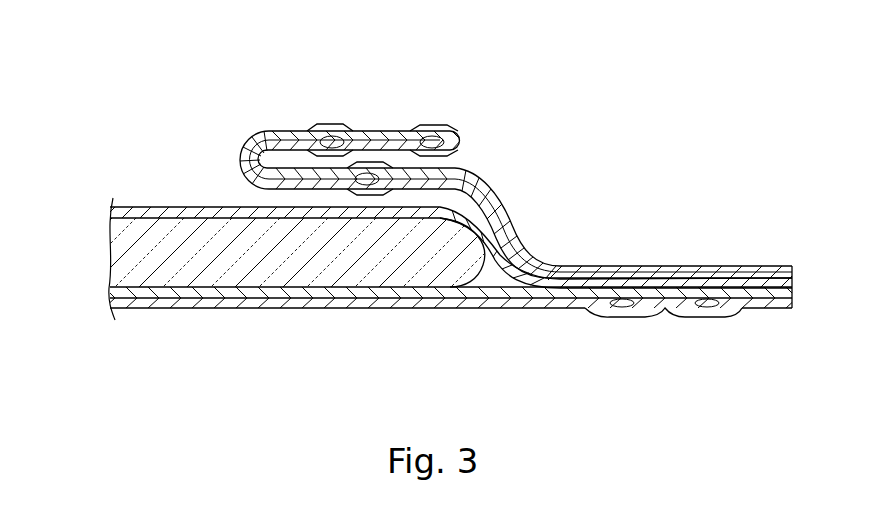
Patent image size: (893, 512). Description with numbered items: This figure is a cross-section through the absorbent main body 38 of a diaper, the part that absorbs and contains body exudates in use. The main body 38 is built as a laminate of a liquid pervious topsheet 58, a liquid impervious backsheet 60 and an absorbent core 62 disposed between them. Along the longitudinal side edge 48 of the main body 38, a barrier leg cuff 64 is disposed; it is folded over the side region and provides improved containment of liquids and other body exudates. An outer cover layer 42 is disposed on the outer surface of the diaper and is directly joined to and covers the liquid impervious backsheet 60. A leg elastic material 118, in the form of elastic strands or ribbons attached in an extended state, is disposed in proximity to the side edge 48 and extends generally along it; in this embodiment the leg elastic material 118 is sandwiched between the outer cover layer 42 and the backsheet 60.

The absorbent main body 38 is at (641, 153).
The outer cover layer 42 is at (500, 310).
The longitudinal side edge 48 is at (793, 275).
The liquid pervious topsheet 58 is at (150, 205).
The liquid impervious backsheet 60 is at (110, 291).
The absorbent core 62 is at (127, 253).
The barrier leg cuff 64 is at (322, 126).
The leg elastic material 118 is at (707, 317).